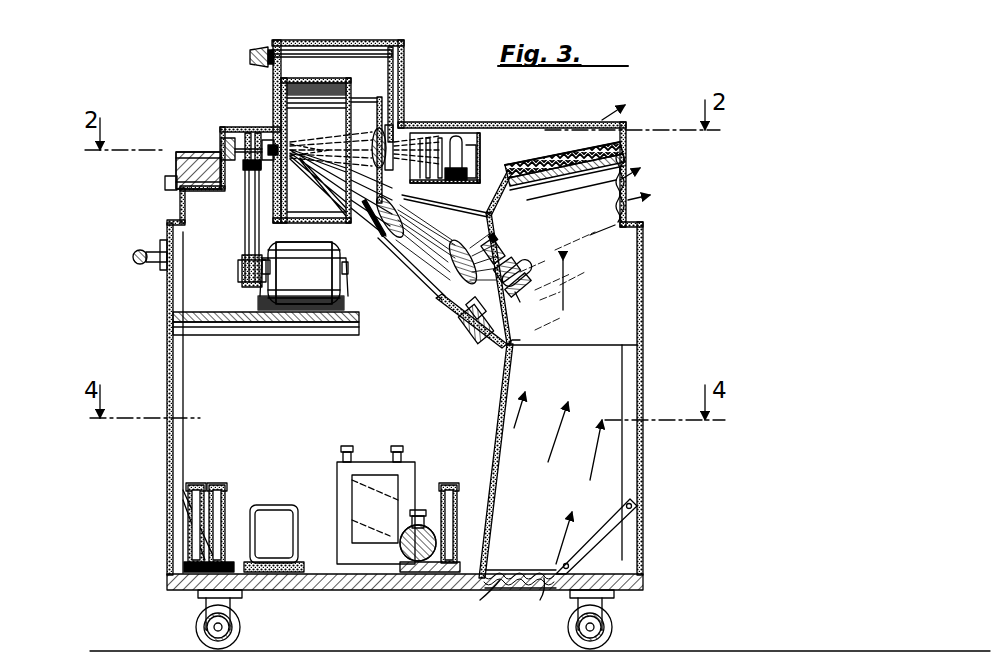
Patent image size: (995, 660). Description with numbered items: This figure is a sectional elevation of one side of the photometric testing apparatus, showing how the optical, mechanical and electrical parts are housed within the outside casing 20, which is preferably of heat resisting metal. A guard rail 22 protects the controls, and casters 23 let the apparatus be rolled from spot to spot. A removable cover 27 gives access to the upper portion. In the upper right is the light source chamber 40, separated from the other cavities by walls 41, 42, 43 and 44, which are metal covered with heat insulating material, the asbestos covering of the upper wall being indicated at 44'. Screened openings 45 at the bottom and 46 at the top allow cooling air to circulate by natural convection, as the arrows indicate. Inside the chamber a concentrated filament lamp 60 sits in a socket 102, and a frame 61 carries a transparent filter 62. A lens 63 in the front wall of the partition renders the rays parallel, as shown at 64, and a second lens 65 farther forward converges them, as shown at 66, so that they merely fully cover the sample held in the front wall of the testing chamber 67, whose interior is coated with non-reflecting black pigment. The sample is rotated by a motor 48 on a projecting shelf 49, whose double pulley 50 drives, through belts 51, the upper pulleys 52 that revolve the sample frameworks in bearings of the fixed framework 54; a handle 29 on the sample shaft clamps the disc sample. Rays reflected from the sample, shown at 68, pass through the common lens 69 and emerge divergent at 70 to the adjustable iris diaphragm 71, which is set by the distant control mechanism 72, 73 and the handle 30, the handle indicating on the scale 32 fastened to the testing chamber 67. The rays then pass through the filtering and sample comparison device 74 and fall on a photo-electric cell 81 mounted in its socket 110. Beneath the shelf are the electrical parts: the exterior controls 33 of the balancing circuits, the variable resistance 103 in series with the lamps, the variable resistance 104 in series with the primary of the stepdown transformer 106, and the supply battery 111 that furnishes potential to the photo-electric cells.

The outside casing 20 is at (643, 320).
The guard rail 22 is at (140, 259).
The casters 23 is at (195, 627).
The removable cover 27 is at (362, 43).
The handles 29 is at (225, 148).
The adjusting handle 30 is at (265, 48).
The scale 32 is at (276, 100).
The exterior controls 33 is at (166, 185).
The light source chamber 40 is at (582, 334).
The wall 41 is at (480, 322).
The wall 42 is at (445, 304).
The wall 43 is at (571, 164).
The wall 44 is at (483, 461).
The heat insulating covering 44' is at (565, 125).
The screened openings 45 is at (512, 580).
The screened openings 46 is at (623, 188).
The motor 48 is at (303, 276).
The projecting shelf 49 is at (276, 324).
The double pulley 50 is at (248, 283).
The belts 51 is at (257, 225).
The upper pulleys 52 is at (250, 172).
The fixed framework 54 is at (262, 135).
The electric lamps 60 is at (530, 280).
The frames 61 is at (498, 240).
The transparent filters 62 is at (508, 258).
The lenses 63 is at (452, 268).
The parallel light rays 64 is at (435, 232).
The second lenses 65 is at (386, 238).
The converging light rays 66 is at (338, 183).
The testing chamber 67 is at (302, 78).
The reflected light rays 68 is at (332, 147).
The common lens 69 is at (376, 140).
The emergent light rays 70 is at (416, 142).
The adjustable diaphragm 71 is at (396, 125).
The distant control mechanism 72 is at (393, 72).
The distant control mechanism 73 is at (332, 52).
The filtering and sample comparison device 74 is at (442, 148).
The photo-electric cells 81 is at (462, 140).
The sockets 102 is at (507, 340).
The variable resistance 103 is at (222, 485).
The variable resistance 104 is at (458, 492).
The stepdown transformer 106 is at (280, 508).
The sockets 110 is at (480, 170).
The supply battery 111 is at (378, 462).